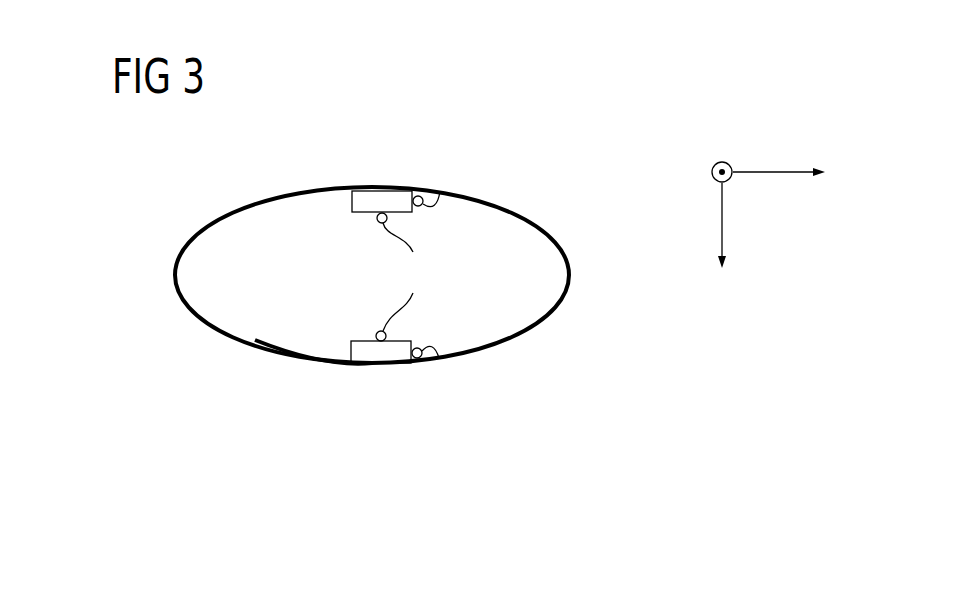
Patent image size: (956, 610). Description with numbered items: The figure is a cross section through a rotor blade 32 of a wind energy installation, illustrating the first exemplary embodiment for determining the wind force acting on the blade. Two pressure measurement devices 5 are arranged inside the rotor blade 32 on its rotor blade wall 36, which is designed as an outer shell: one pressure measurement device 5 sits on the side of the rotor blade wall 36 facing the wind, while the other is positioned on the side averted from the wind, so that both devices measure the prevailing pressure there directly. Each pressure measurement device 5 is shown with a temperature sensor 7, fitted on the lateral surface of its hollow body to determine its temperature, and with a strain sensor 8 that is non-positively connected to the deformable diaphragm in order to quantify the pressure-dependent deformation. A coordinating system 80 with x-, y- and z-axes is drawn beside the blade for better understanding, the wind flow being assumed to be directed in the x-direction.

The pressure measurement device 5 is at (372, 196).
The temperature sensor 7 is at (437, 192).
The strain sensor 8 is at (398, 277).
The rotor blade 32 is at (168, 223).
The rotor blade wall 36 is at (268, 354).
The coordinating system 80 is at (752, 207).